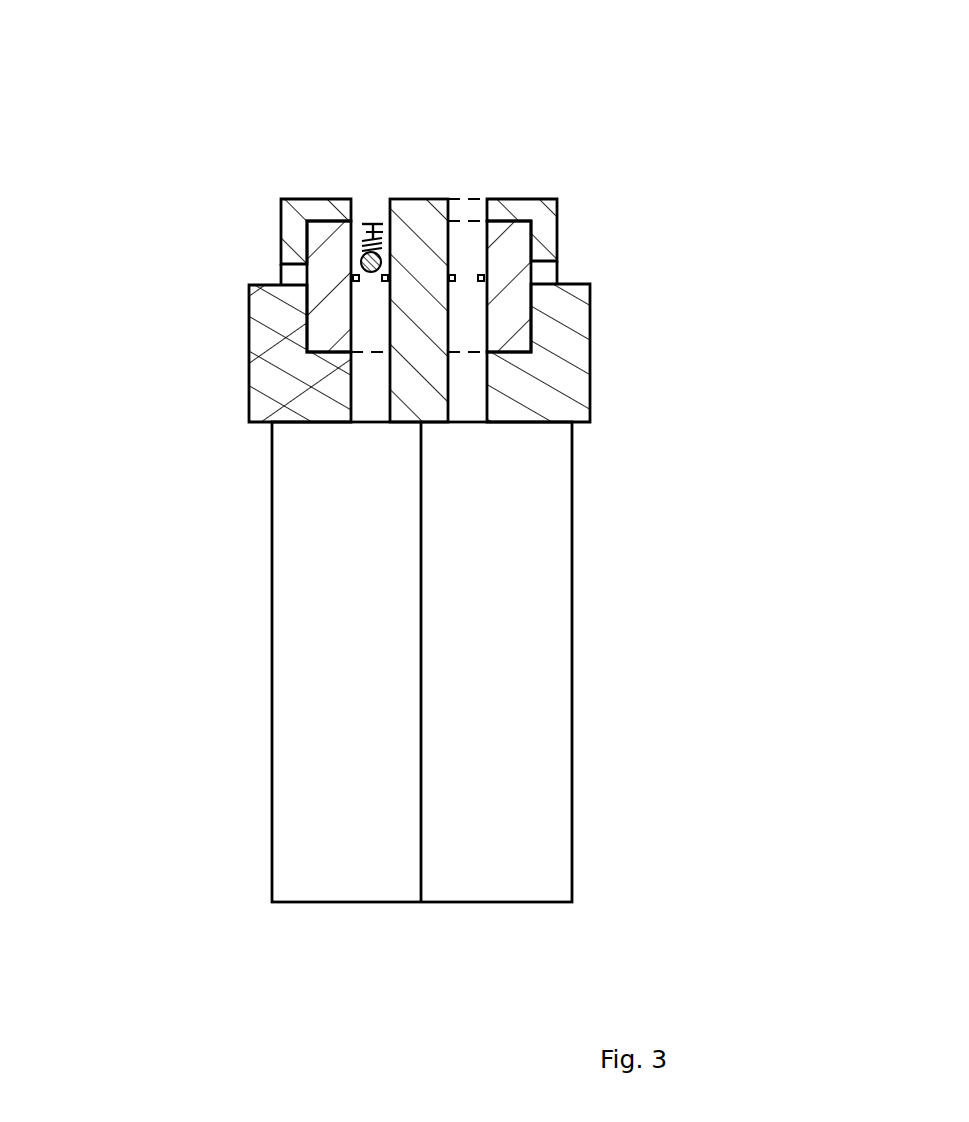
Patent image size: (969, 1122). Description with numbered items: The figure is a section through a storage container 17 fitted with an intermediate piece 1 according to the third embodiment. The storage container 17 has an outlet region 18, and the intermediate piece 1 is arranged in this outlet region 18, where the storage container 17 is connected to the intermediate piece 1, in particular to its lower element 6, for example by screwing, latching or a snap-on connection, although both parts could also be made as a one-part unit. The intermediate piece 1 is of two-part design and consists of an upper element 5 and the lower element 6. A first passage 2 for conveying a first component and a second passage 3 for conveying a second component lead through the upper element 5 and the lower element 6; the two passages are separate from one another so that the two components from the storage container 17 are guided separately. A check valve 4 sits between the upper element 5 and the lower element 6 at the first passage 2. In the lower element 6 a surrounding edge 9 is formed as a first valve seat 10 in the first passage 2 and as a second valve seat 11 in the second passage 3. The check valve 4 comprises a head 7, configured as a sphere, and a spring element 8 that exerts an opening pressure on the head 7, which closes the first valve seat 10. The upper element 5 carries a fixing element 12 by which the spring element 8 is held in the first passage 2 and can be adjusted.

The intermediate piece 1 is at (562, 101).
The first passage 2 is at (363, 313).
The second passage 3 is at (571, 422).
The check valve 4 is at (373, 200).
The upper element 5 is at (544, 208).
The lower element 6 is at (521, 297).
The head 7 is at (355, 278).
The spring element 8 is at (307, 246).
The surrounding edge 9 is at (363, 268).
The first valve seat 10 is at (371, 262).
The second valve seat 11 is at (480, 277).
The fixing element 12 is at (362, 222).
The storage container 17 is at (600, 700).
The outlet region 18 is at (273, 423).